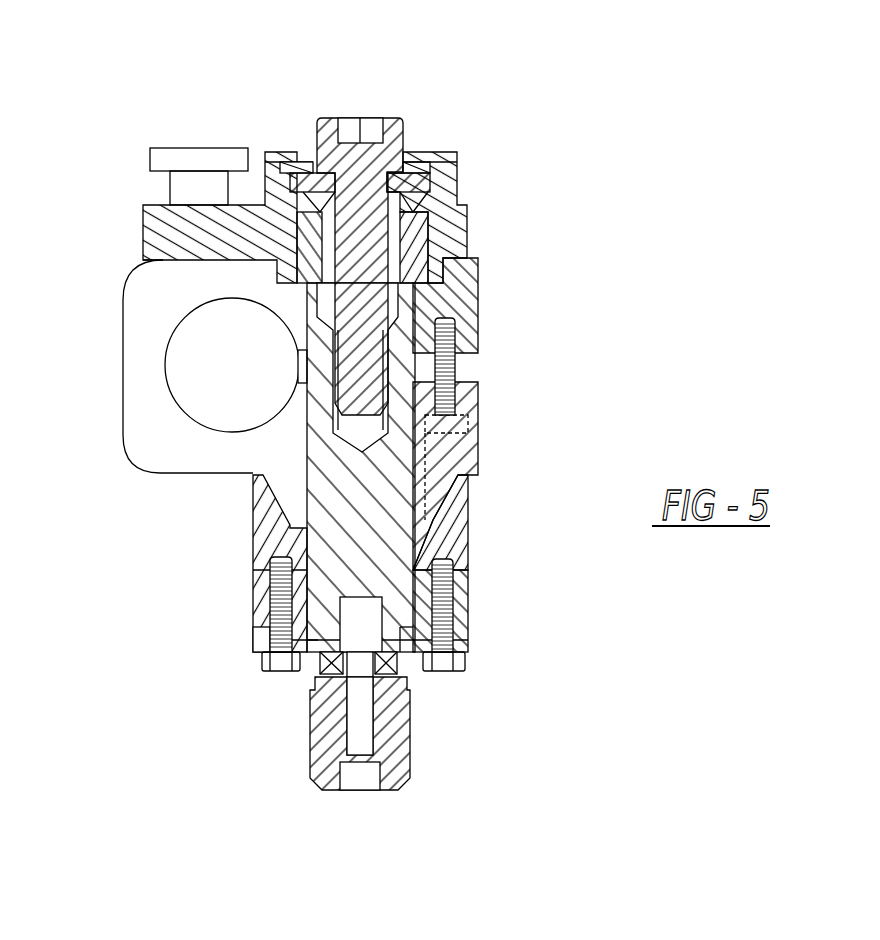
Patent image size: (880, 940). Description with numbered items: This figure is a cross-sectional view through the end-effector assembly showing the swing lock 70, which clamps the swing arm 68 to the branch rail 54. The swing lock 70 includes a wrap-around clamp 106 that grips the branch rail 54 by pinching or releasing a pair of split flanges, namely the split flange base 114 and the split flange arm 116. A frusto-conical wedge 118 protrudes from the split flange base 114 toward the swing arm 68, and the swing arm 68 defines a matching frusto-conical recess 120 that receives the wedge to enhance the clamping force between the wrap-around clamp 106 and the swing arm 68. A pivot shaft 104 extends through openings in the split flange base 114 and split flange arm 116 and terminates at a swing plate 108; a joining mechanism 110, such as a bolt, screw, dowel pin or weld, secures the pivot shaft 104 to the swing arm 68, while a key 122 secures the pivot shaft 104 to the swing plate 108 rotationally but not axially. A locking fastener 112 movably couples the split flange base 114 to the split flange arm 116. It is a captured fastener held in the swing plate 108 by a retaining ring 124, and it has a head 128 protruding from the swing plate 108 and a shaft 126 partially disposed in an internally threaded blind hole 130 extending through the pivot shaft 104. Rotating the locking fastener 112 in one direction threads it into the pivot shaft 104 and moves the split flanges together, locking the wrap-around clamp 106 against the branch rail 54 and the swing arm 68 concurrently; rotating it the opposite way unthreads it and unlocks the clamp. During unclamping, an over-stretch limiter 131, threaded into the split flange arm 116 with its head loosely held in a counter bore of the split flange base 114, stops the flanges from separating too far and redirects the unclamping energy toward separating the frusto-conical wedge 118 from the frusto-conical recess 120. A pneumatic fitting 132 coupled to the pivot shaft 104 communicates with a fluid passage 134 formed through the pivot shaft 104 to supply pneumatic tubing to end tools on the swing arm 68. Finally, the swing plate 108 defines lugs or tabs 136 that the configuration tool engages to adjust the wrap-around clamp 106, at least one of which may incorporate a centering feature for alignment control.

The branch rail 54 is at (192, 313).
The swing arm 68 is at (460, 545).
The swing lock 70 is at (633, 150).
The pivot shaft 104 is at (357, 513).
The wrap-around clamp 106 is at (145, 441).
The swing plate 108 is at (155, 233).
The joining mechanism 110 is at (253, 627).
The locking fastener 112 is at (343, 118).
The split flange base 114 is at (453, 445).
The split flange arm 116 is at (458, 302).
The frusto-conical wedge 118 is at (292, 493).
The frusto-conical recess 120 is at (452, 492).
The key 122 is at (405, 245).
The retaining ring 124 is at (433, 163).
The shaft 126 is at (362, 357).
The head 128 is at (393, 130).
The blind hole 130 is at (335, 382).
The over-stretch limiter 131 is at (457, 365).
The pneumatic fitting 132 is at (412, 728).
The fluid passage 134 is at (333, 603).
The tabs 136 is at (200, 148).